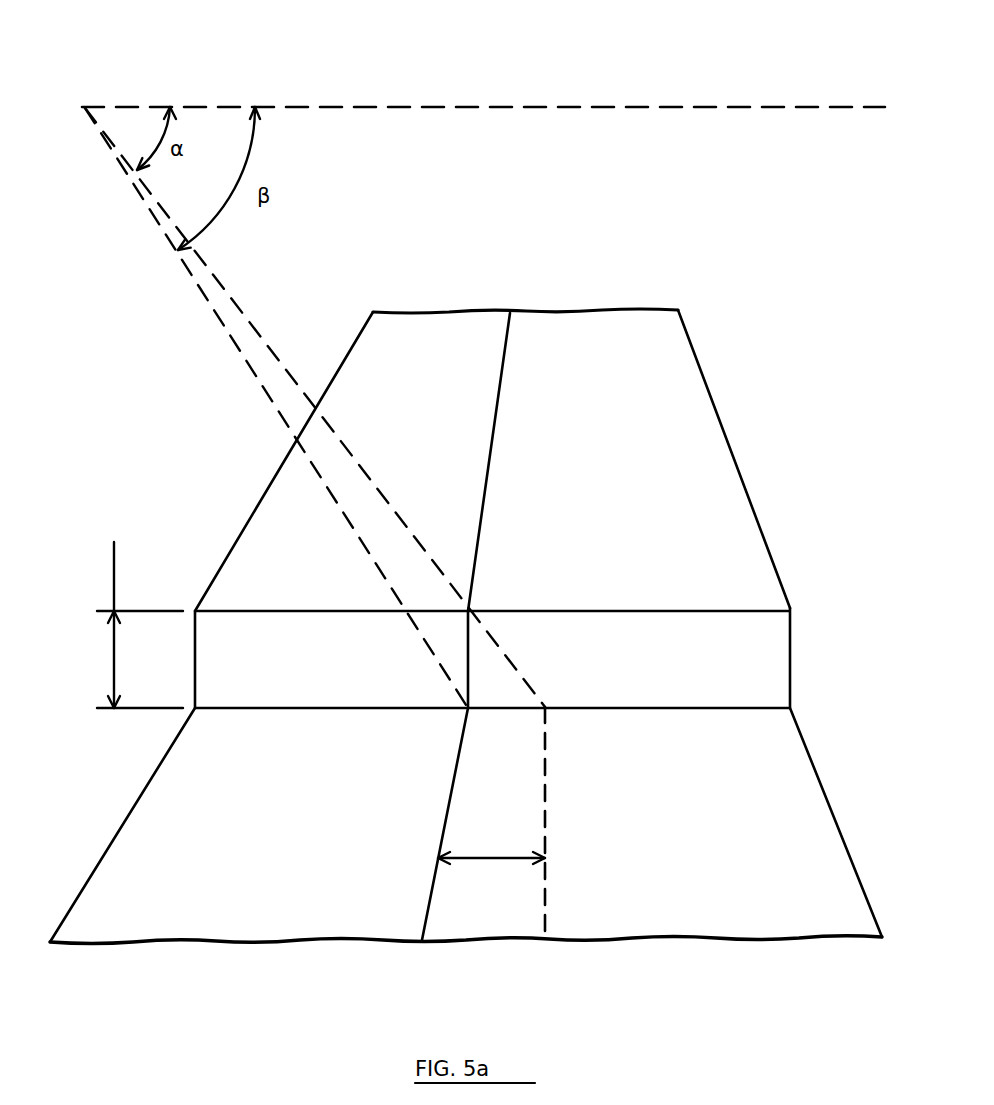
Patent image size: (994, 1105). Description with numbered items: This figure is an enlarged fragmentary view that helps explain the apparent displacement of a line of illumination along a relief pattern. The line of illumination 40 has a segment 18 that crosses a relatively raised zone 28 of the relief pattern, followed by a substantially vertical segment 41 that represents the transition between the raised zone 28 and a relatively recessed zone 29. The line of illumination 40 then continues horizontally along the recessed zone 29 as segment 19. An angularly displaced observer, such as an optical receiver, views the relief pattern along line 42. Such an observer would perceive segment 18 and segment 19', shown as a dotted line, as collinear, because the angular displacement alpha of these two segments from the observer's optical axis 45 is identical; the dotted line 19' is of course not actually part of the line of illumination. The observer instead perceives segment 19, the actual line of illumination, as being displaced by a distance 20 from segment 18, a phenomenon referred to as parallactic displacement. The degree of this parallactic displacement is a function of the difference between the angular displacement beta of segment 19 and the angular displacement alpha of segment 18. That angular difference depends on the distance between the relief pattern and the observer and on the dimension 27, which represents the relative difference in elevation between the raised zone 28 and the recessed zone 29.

The optical axis 45 is at (580, 102).
The viewing line 42 is at (248, 322).
The segment 18 is at (485, 478).
The line of illumination 40 is at (505, 365).
The relatively raised zone 28 is at (693, 487).
The substantially vertical segment 41 is at (470, 653).
The dimension 27 is at (115, 558).
The relatively recessed zone 29 is at (755, 818).
The segment 19 is at (427, 824).
The dotted line segment 19' is at (578, 821).
The distance 20 is at (485, 862).